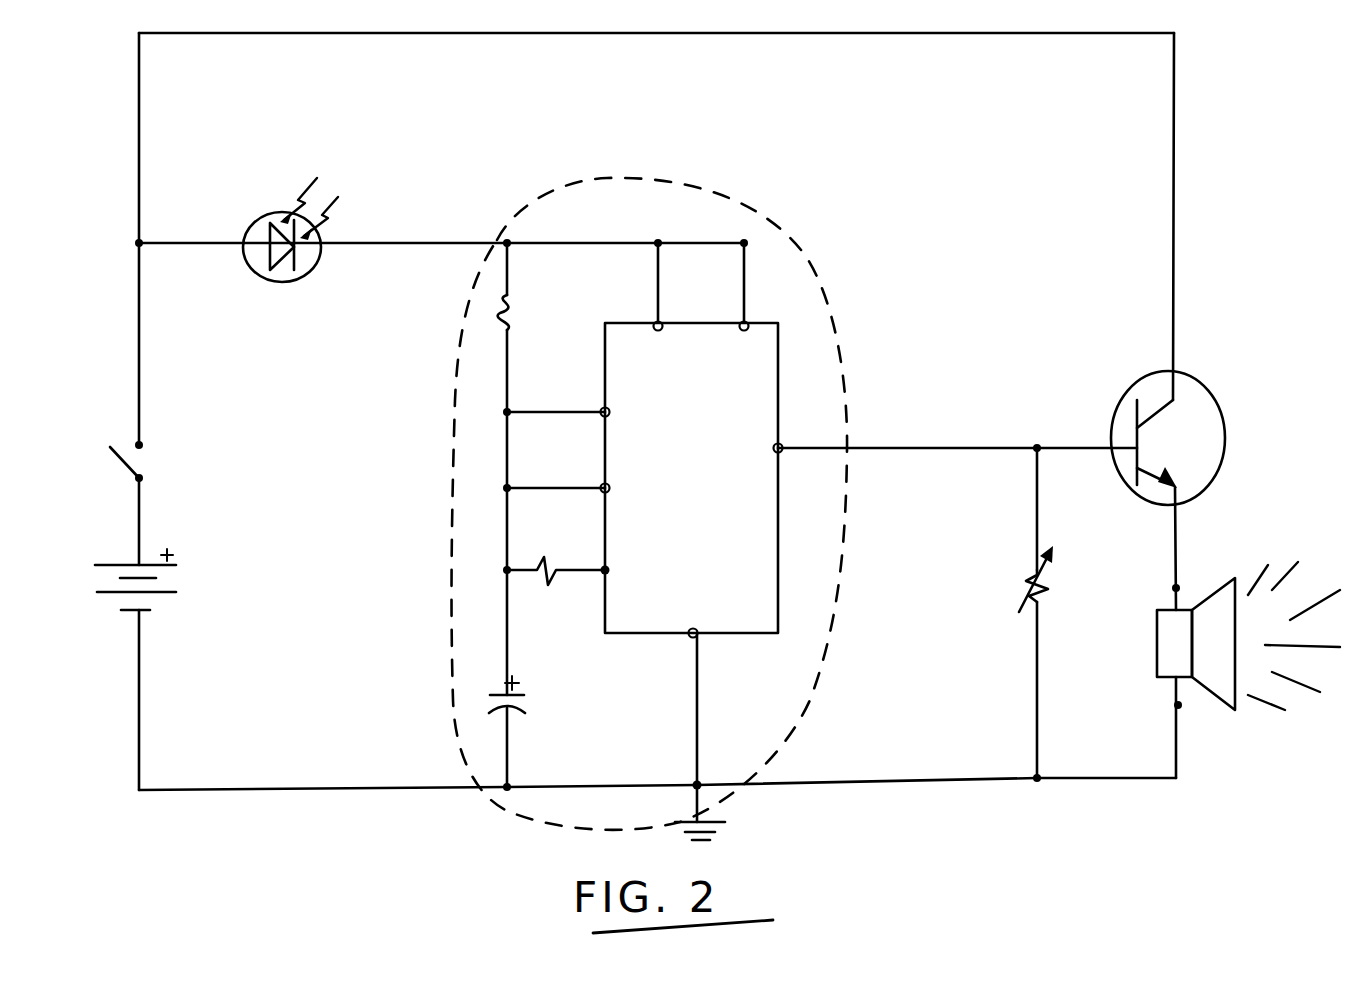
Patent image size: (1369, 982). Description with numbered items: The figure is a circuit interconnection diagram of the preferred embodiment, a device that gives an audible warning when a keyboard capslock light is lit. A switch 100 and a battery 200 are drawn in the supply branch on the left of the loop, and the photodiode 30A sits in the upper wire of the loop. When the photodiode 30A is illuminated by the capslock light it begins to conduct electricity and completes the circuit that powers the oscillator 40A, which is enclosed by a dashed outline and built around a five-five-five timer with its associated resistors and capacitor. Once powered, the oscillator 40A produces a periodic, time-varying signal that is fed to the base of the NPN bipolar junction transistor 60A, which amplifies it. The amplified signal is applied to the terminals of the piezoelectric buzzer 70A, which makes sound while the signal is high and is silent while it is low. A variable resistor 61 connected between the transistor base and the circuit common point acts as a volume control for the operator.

The switch 100 is at (179, 460).
The battery 200 is at (179, 583).
The photodiode 30A is at (290, 251).
The oscillator 40A is at (650, 486).
The NPN bipolar junction transistor 60A is at (1197, 438).
The variable resistor 61 is at (1054, 613).
The piezoelectric buzzer 70A is at (1248, 662).